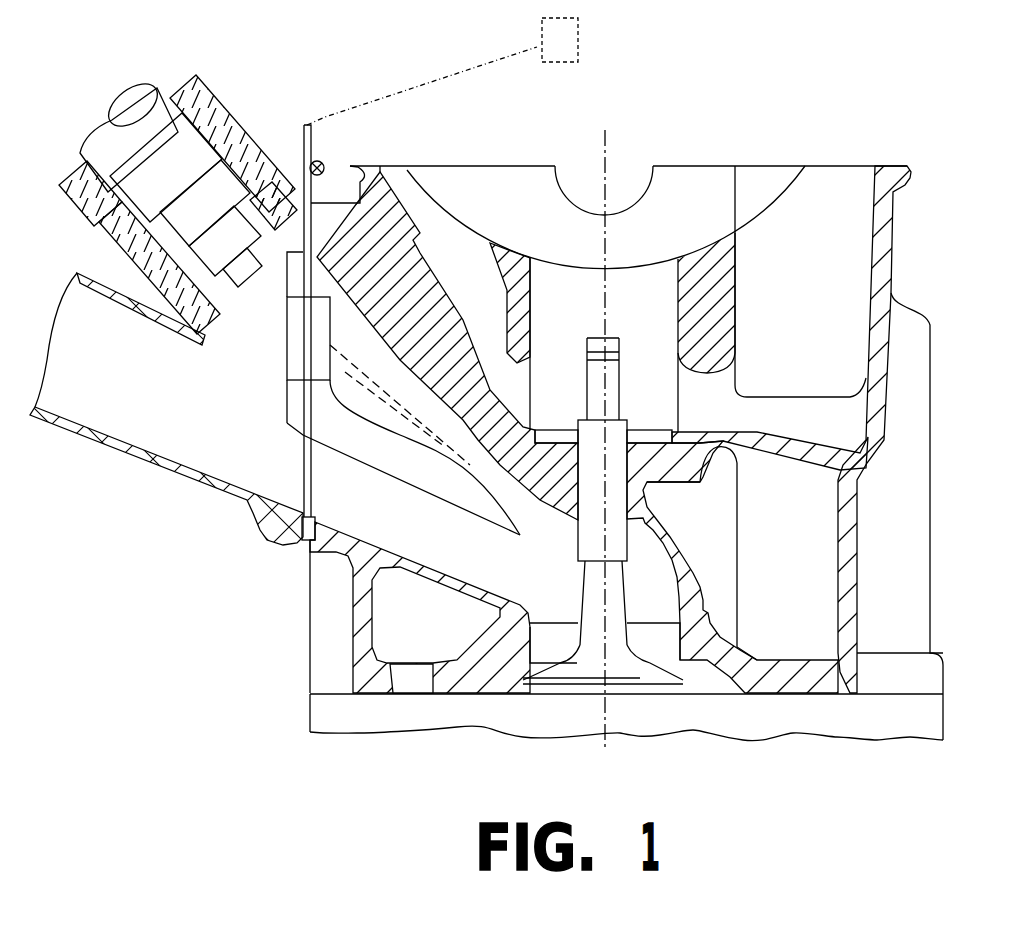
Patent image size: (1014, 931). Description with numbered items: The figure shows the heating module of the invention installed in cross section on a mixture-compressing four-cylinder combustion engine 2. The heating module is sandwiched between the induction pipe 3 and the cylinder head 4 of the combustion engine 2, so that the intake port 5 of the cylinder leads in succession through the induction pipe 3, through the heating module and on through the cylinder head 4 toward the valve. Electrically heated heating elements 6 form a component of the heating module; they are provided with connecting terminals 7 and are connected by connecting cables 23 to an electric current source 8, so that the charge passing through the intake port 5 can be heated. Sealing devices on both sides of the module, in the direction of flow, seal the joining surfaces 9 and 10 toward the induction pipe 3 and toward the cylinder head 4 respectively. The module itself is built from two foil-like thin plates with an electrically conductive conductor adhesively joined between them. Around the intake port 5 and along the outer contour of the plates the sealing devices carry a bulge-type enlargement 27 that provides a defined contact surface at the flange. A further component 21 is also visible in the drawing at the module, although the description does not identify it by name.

The combustion engine 2 is at (923, 722).
The induction pipe 3 is at (190, 473).
The cylinder head 4 is at (368, 552).
The intake port 5 is at (133, 407).
The heating element 6 is at (358, 437).
The connecting terminal 7 is at (306, 160).
The electric current source 8 is at (570, 53).
The joining surface 9 is at (318, 256).
The joining surface 10 is at (285, 274).
The vane mounting block 21 is at (300, 350).
The connecting cable 23 is at (422, 79).
The bulge-type enlargement 27 is at (300, 527).